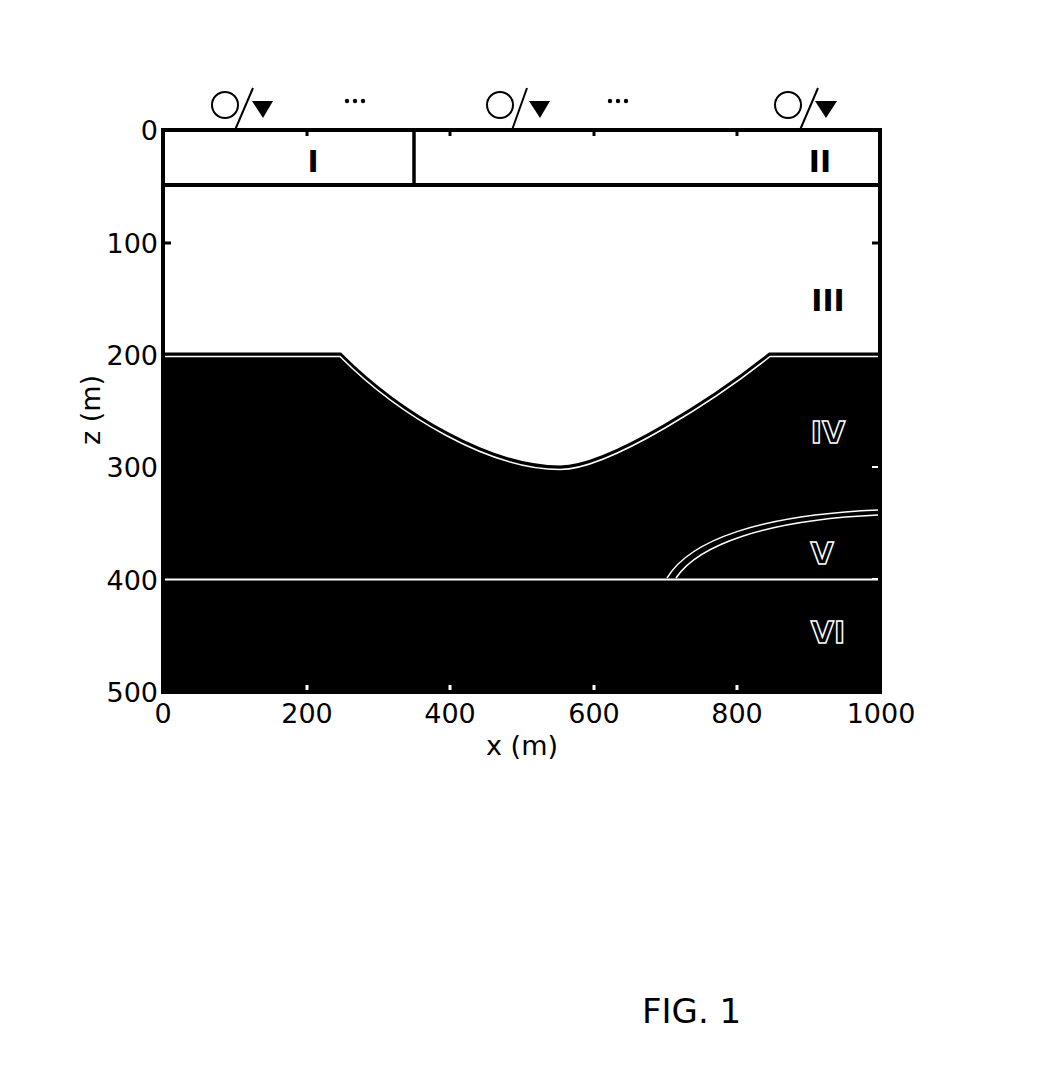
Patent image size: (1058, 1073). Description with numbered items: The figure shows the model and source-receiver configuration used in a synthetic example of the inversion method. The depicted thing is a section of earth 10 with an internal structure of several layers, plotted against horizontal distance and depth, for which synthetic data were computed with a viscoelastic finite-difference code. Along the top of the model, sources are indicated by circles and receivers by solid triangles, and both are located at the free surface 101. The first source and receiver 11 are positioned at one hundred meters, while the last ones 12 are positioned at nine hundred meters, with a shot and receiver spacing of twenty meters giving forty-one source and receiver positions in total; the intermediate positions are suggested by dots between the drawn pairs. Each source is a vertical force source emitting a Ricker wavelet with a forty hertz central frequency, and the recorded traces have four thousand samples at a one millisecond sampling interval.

The section of earth 10 is at (92, 296).
The first source and receiver 11 is at (243, 90).
The last source and receiver 12 is at (810, 86).
The free surface 101 is at (420, 130).